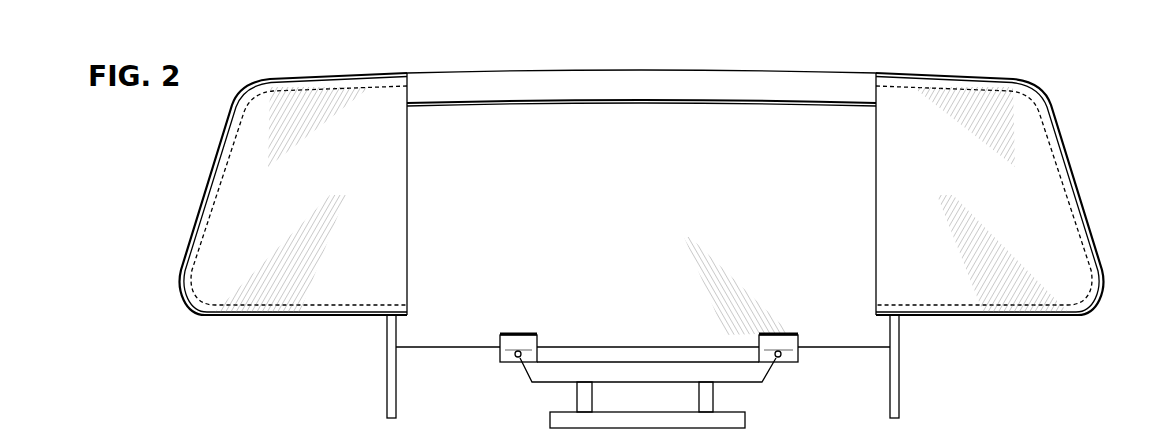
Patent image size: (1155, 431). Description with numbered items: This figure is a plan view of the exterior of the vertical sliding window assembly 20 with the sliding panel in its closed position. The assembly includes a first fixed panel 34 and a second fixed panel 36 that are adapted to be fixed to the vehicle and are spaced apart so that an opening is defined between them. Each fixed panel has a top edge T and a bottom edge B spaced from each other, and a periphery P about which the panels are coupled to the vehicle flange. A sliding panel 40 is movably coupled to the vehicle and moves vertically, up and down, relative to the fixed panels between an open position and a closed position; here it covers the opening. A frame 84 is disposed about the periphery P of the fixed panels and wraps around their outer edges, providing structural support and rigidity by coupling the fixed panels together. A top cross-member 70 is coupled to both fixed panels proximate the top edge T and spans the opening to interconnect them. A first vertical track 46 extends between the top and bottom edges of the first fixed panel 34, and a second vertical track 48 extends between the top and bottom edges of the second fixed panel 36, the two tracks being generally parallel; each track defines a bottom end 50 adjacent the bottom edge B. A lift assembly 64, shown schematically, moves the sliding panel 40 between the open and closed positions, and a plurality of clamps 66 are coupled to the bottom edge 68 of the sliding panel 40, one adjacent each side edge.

The vertical sliding window assembly 20 is at (1027, 70).
The first fixed panel 34 is at (226, 208).
The second fixed panel 36 is at (1065, 223).
The sliding panel 40 is at (750, 127).
The first vertical track 46 is at (387, 372).
The second vertical track 48 is at (899, 353).
The bottom end 50 is at (404, 410).
The lift assembly 64 is at (735, 417).
The clamps 66 is at (530, 343).
The bottom edge of the sliding panel 68 is at (440, 347).
The top cross-member 70 is at (652, 84).
The frame 84 is at (1052, 107).
The top edge T is at (275, 70).
The bottom edge B is at (273, 332).
The periphery P is at (333, 305).